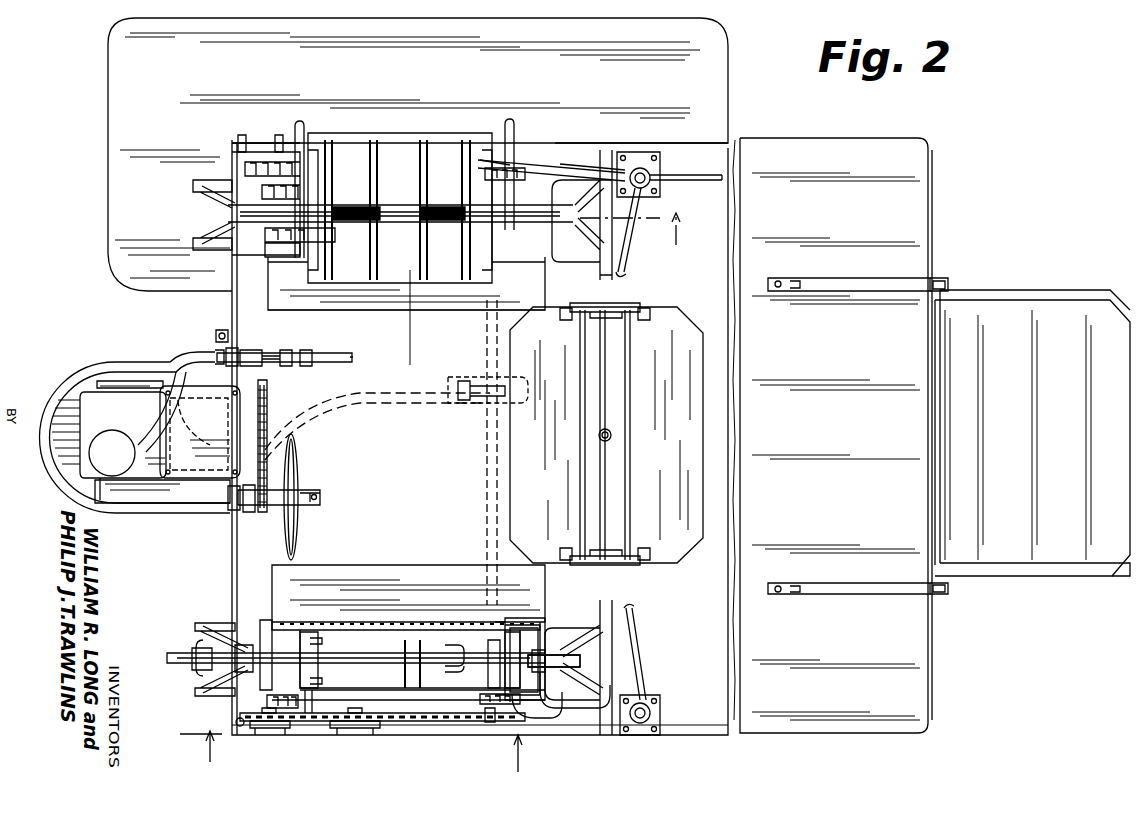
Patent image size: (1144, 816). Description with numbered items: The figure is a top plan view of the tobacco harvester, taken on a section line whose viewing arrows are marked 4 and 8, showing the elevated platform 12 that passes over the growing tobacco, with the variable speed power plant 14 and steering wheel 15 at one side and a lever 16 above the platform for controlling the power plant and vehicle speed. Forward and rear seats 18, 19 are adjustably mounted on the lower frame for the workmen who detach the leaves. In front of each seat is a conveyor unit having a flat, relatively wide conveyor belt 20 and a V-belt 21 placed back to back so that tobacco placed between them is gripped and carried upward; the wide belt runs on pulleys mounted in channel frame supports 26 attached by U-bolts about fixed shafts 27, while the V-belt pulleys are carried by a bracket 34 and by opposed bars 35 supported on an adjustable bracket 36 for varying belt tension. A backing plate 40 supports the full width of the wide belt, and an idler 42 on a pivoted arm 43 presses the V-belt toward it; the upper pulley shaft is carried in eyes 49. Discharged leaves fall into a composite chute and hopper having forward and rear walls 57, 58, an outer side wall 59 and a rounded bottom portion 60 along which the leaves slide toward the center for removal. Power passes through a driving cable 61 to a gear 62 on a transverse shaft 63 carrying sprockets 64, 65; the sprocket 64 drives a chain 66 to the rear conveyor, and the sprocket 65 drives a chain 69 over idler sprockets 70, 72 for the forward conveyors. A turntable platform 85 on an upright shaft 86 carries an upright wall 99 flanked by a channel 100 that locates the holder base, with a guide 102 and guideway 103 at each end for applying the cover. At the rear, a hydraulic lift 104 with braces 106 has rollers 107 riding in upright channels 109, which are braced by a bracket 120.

The section line / housing 4 is at (192, 405).
The section line 8 is at (357, 751).
The elevated platform 12 is at (450, 363).
The variable speed power plant 14 is at (120, 365).
The steering wheel 15 is at (296, 472).
The lever 16 is at (326, 340).
The forward seat 18 is at (370, 669).
The rear seat 19 is at (580, 250).
The conveyor belt 20 is at (258, 205).
The V-belt 21 is at (345, 210).
The channel frame supports 26 is at (505, 628).
The fixed shafts 27 is at (392, 675).
The bracket 34 is at (548, 158).
The opposed bars 35 is at (402, 215).
The bracket 36 is at (294, 128).
The backing plate 40 is at (532, 630).
The idler 42 is at (262, 648).
The arm 43 is at (226, 238).
The eyes 49 is at (282, 258).
The forward wall 57 is at (318, 150).
The rear wall 58 is at (486, 145).
The outer side wall 59 is at (401, 136).
The bottom portion 60 is at (378, 278).
The driving cable 61 is at (333, 398).
The gear 62 is at (472, 405).
The transverse shaft 63 is at (490, 455).
The sprocket 64 is at (480, 699).
The sprocket 65 is at (490, 724).
The chain 66 is at (525, 165).
The chain 69 is at (310, 722).
The sprocket 70 is at (352, 728).
The sprocket 72 is at (270, 728).
The platform 85 is at (508, 466).
The upright shaft 86 is at (598, 437).
The upright wall 99 is at (608, 409).
The channel 100 is at (628, 380).
The guide 102 is at (645, 312).
The guideway 103 is at (645, 316).
The hydraulic lift 104 is at (1012, 420).
The braces 106 is at (1075, 298).
The rollers 107 is at (948, 287).
The upright channels 109 is at (945, 280).
The bracket 120 is at (856, 281).